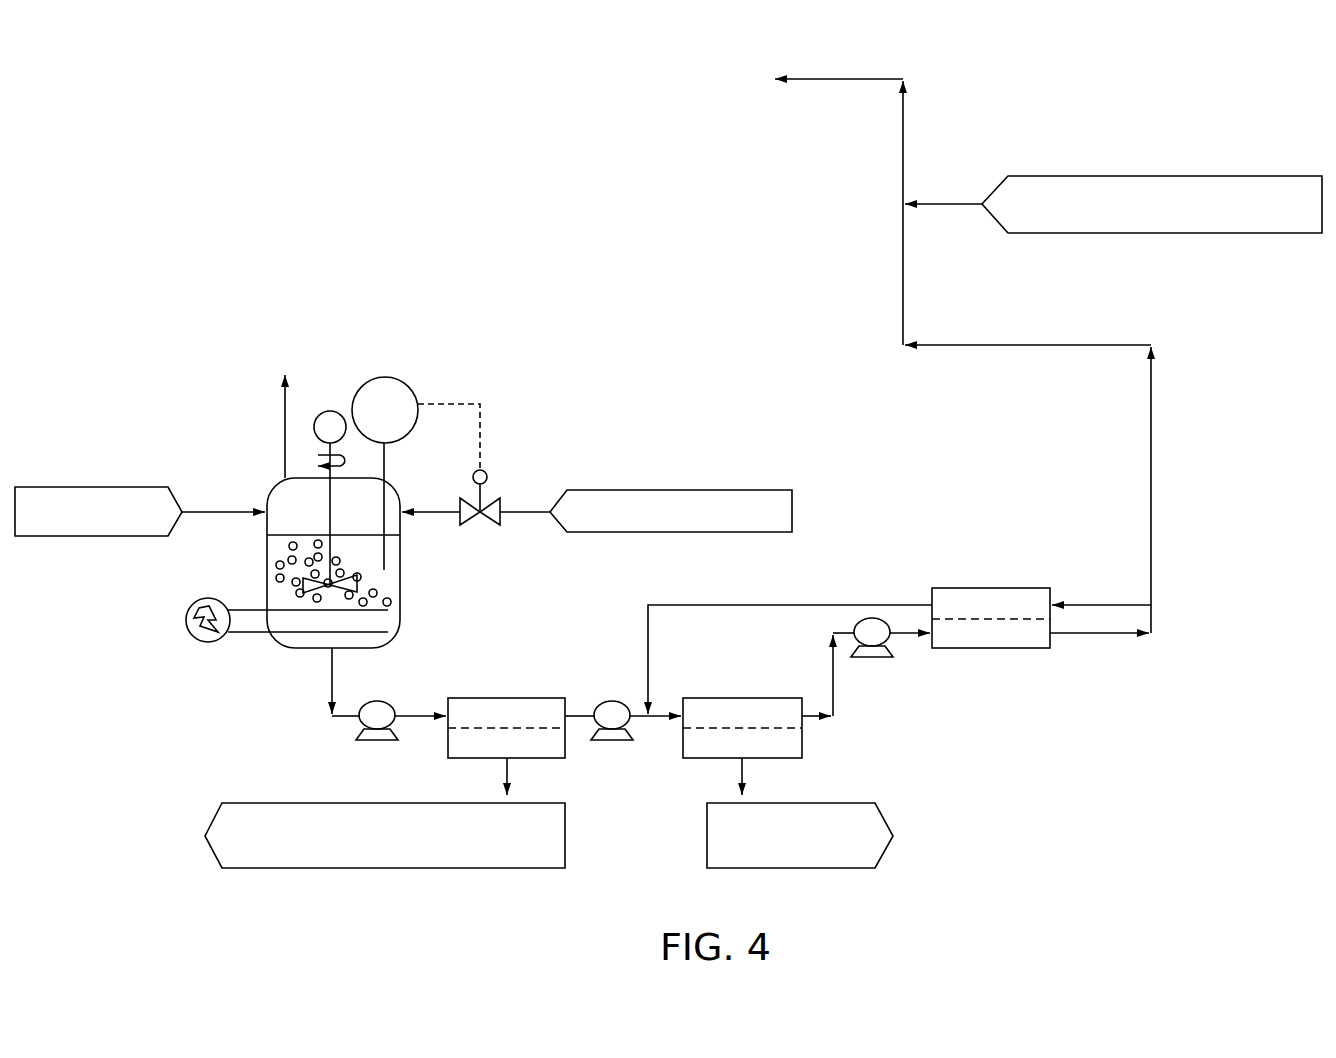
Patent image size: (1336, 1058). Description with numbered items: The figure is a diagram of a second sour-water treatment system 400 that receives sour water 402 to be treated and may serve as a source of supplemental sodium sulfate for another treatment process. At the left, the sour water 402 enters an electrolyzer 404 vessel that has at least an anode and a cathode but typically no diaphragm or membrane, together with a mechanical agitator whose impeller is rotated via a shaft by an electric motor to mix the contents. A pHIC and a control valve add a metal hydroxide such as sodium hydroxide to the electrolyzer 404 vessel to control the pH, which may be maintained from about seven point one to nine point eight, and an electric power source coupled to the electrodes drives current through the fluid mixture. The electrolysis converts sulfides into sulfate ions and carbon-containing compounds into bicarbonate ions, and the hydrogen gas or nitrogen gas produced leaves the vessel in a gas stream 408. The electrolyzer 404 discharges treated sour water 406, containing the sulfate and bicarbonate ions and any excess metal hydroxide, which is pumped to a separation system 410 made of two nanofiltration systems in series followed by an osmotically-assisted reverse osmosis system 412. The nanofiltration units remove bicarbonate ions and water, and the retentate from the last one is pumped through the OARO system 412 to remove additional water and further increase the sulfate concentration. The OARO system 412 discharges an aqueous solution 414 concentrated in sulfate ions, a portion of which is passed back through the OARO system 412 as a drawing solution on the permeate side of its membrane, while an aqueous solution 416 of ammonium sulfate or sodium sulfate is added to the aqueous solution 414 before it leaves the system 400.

The sour-water treatment system 400 is at (150, 87).
The sour water 402 is at (213, 508).
The electrolyzer 404 is at (280, 647).
The treated sour water 406 is at (332, 685).
The gas stream 408 is at (283, 425).
The separation system 410 is at (975, 769).
The osmotically-assisted reverse osmosis (OARO) system 412 is at (992, 588).
The aqueous solution concentrated in sulfate ions 414 is at (818, 80).
The aqueous solution of ammonium sulfate or sodium sulfate 416 is at (937, 205).